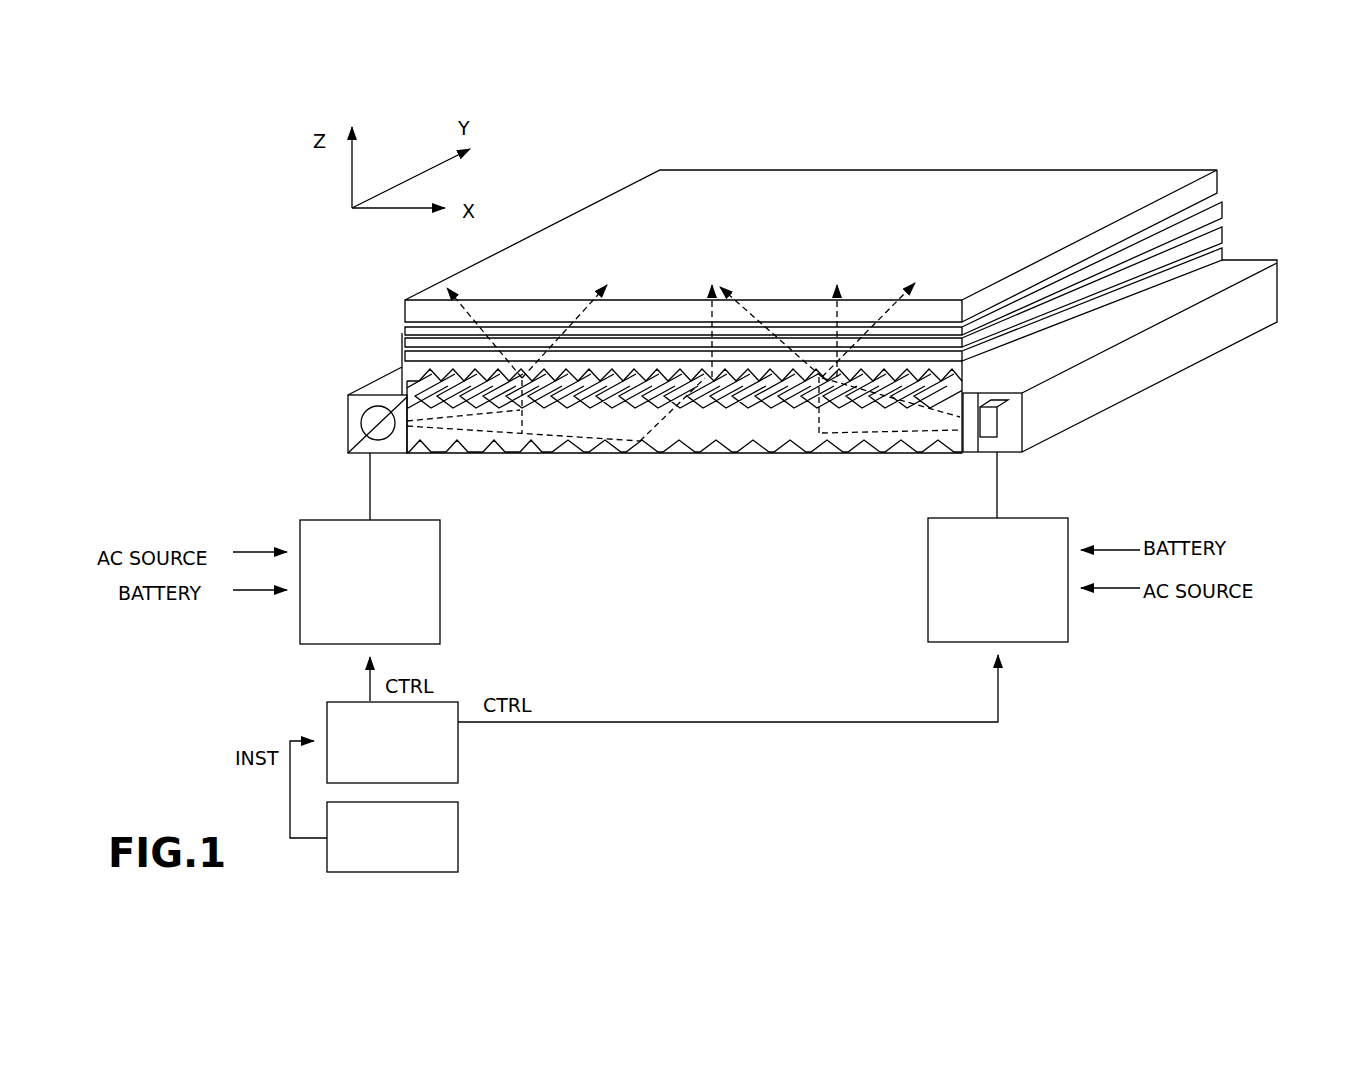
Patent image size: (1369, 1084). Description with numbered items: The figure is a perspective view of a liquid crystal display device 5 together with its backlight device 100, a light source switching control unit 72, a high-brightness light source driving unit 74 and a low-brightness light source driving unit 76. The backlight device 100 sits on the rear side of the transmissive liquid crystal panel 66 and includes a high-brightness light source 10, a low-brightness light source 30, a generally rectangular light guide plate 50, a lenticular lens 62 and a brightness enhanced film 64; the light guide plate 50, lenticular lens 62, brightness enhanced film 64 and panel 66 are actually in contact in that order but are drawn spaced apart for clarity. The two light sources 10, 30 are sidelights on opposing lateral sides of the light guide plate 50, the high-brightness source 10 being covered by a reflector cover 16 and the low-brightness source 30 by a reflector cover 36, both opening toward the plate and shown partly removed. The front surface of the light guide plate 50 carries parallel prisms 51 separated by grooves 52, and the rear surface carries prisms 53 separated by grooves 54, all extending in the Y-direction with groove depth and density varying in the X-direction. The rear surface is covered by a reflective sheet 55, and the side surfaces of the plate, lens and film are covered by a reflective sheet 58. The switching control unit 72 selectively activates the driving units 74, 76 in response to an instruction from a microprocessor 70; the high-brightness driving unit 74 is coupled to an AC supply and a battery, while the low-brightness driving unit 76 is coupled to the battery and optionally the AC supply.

The liquid crystal display device 5 is at (633, 140).
The high-brightness light source 10 is at (375, 410).
The reflector cover 16 is at (348, 418).
The low-brightness light source 30 is at (1010, 440).
The reflector cover 36 is at (1178, 363).
The light guide plate 50 is at (693, 427).
The prisms 51 is at (462, 403).
The grooves 52 is at (552, 408).
The prisms 53 is at (827, 403).
The grooves 54 is at (778, 453).
The reflective sheet 55 is at (907, 458).
The reflective sheet 58 is at (1230, 258).
The lenticular lens 62 is at (1222, 235).
The brightness enhanced film 64 is at (1222, 210).
The transmissive liquid crystal panel 66 is at (1212, 181).
The microprocessor 70 is at (380, 864).
The light source switching control unit 72 is at (380, 769).
The high-brightness light source driving unit 74 is at (358, 637).
The low-brightness light source driving unit 76 is at (986, 636).
The backlight device 100 is at (284, 398).